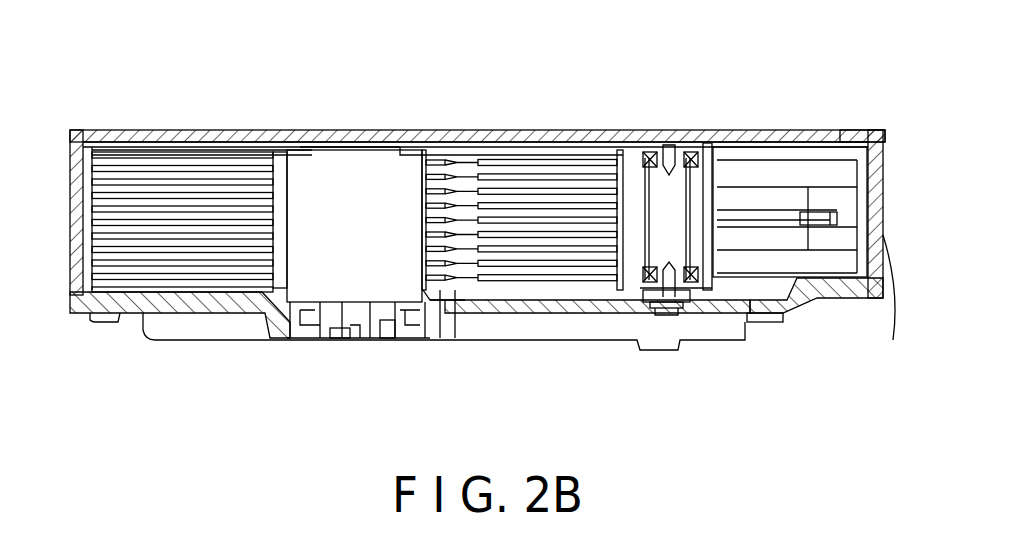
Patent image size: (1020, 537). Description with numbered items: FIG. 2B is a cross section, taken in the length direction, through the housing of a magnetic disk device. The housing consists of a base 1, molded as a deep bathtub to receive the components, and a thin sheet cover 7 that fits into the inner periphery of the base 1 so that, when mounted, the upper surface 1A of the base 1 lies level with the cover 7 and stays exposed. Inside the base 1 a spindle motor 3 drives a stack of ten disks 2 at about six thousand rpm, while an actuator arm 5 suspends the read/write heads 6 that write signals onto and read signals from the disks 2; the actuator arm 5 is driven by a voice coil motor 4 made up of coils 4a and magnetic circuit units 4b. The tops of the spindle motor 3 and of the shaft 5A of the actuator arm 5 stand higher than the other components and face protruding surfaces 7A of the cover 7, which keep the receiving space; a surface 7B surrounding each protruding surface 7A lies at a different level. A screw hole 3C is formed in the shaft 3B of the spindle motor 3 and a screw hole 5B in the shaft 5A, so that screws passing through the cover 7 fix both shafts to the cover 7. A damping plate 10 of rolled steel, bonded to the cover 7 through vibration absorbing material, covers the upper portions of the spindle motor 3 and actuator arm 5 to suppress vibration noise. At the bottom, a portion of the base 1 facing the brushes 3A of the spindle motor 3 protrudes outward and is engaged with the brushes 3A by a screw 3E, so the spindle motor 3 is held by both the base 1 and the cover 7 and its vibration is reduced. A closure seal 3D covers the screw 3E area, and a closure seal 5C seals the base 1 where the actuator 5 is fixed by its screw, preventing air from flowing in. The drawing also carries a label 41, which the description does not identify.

The base 1 is at (887, 237).
The upper surface of the base 1A is at (876, 130).
The disks 2 is at (135, 288).
The spindle motor 3 is at (318, 158).
The brushes 3A is at (455, 285).
The shaft of the spindle motor 3B is at (352, 135).
The screw hole 3C is at (383, 142).
The closure seal 3D is at (345, 338).
The screw 3E is at (392, 338).
The voice coil motor 4 is at (752, 170).
The coils 4a is at (777, 222).
The magnetic circuit units 4b is at (848, 173).
The actuator arm 5 is at (632, 163).
The shaft of the actuator arm 5A is at (680, 135).
The screw hole 5B is at (672, 150).
The closure seal 5C is at (682, 313).
The read/write heads 6 is at (453, 283).
The cover 7 is at (357, 177).
The protruding surfaces 7A is at (316, 130).
The surface peripheral to the protruding surface 7B is at (526, 133).
The damping plate 10 is at (573, 133).
The heat receiving plate 41 is at (363, 135).